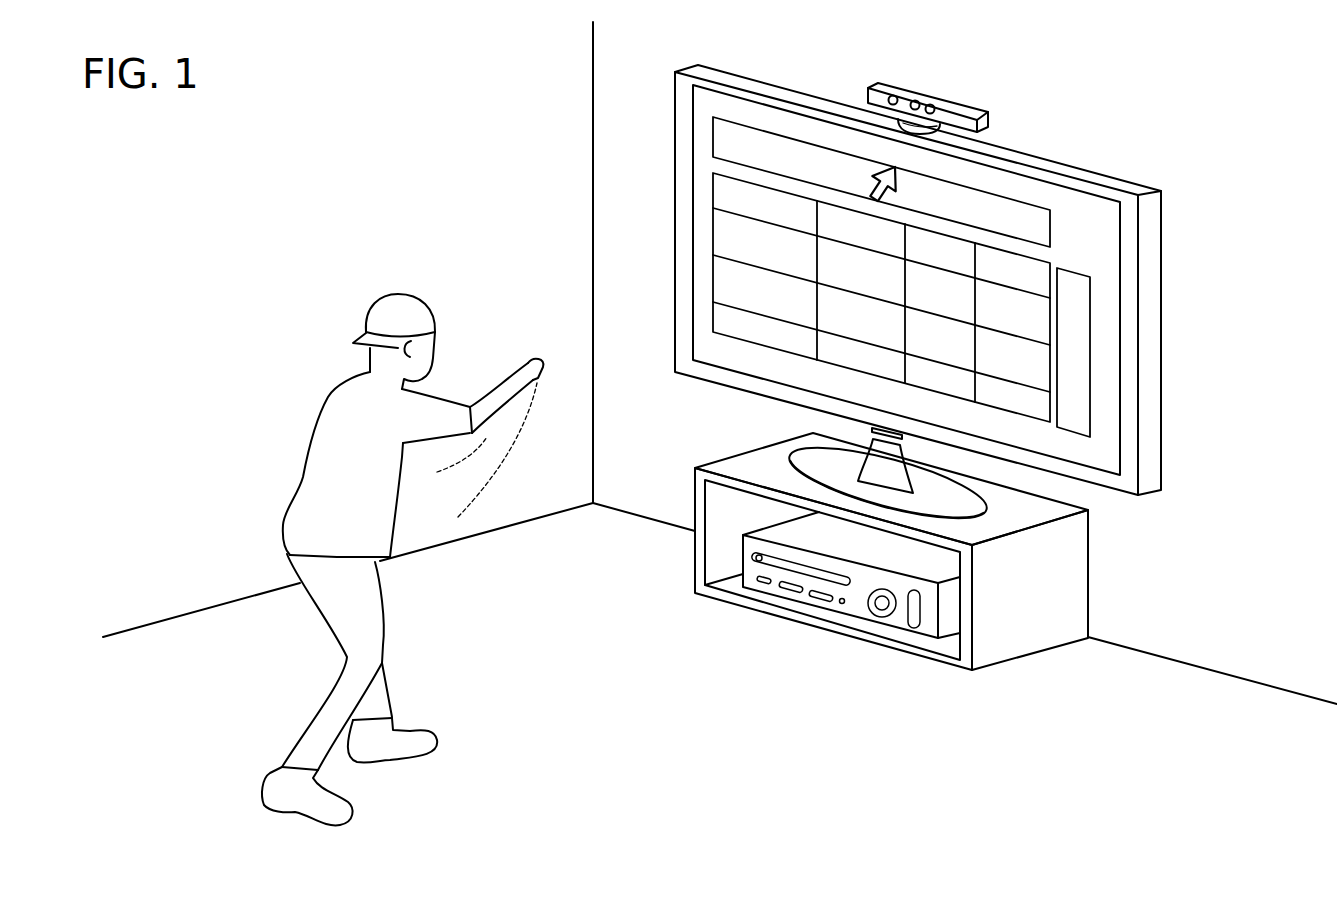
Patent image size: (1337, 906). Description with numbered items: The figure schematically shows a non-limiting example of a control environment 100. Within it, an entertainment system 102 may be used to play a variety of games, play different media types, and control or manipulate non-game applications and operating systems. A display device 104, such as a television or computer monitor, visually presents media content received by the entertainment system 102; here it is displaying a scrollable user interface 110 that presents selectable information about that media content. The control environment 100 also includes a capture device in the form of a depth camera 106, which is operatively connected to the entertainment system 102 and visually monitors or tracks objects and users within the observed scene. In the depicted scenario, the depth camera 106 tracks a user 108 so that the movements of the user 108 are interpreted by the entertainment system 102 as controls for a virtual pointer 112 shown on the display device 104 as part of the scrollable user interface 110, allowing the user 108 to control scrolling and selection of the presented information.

The control environment 100 is at (1021, 47).
The entertainment system 102 is at (862, 617).
The display device 104 is at (1163, 356).
The depth camera 106 is at (957, 113).
The user 108 is at (384, 661).
The scrollable user interface 110 is at (1063, 236).
The virtual pointer 112 is at (895, 167).